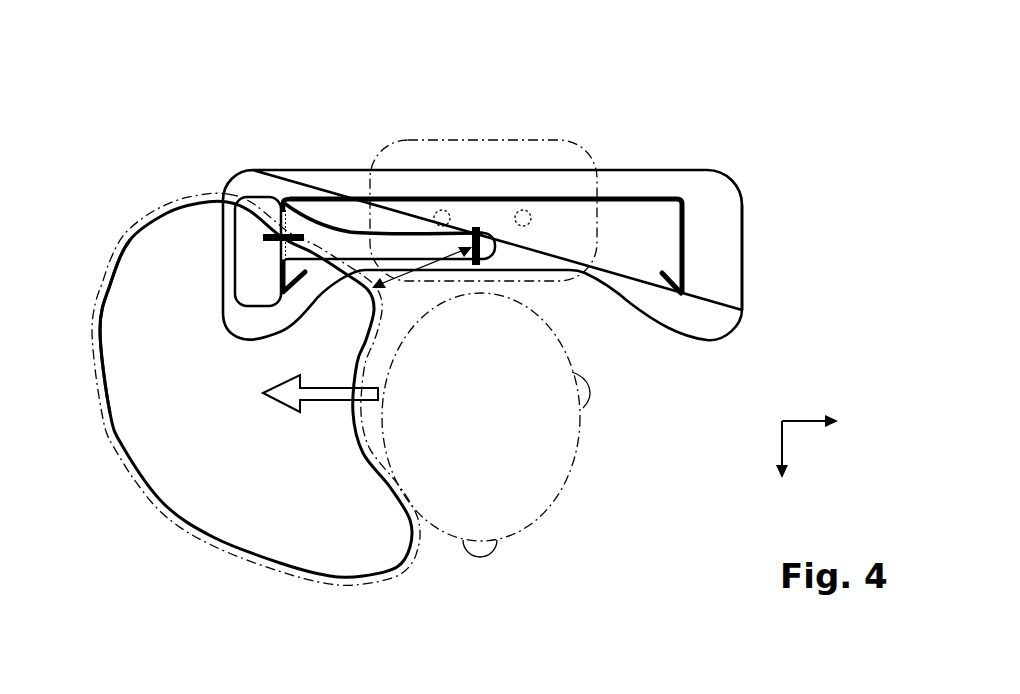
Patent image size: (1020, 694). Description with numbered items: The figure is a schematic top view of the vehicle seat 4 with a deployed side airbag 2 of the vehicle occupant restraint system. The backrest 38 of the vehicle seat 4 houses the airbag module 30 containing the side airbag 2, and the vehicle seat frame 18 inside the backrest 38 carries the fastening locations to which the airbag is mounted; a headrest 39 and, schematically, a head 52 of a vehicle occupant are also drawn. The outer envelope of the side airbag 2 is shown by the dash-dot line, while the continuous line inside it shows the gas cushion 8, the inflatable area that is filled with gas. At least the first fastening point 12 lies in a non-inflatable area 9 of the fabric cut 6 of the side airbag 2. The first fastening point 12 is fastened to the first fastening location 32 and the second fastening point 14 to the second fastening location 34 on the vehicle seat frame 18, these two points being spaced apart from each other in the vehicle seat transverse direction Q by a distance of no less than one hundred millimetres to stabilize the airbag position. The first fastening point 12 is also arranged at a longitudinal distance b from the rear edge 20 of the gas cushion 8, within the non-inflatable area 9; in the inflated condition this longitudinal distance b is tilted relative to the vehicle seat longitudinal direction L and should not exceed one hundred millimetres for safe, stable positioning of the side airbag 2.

The side airbag 2 is at (190, 533).
The vehicle seat 4 is at (754, 170).
The fabric cut 6 is at (152, 492).
The gas cushion 8 is at (120, 447).
The non-inflatable area 9 is at (353, 242).
The first fastening point 12 is at (484, 177).
The second fastening point 14 is at (191, 217).
The vehicle seat frame 18 is at (685, 253).
The rear edge 20 is at (316, 250).
The airbag module 30 is at (247, 318).
The first fastening location 32 is at (499, 235).
The second fastening location 34 is at (280, 240).
The backrest 38 is at (727, 217).
The headrest 39 is at (433, 138).
The head 52 is at (578, 447).
The longitudinal distance b is at (397, 272).
The vehicle seat transverse direction Q is at (803, 417).
The vehicle seat longitudinal direction L is at (780, 445).